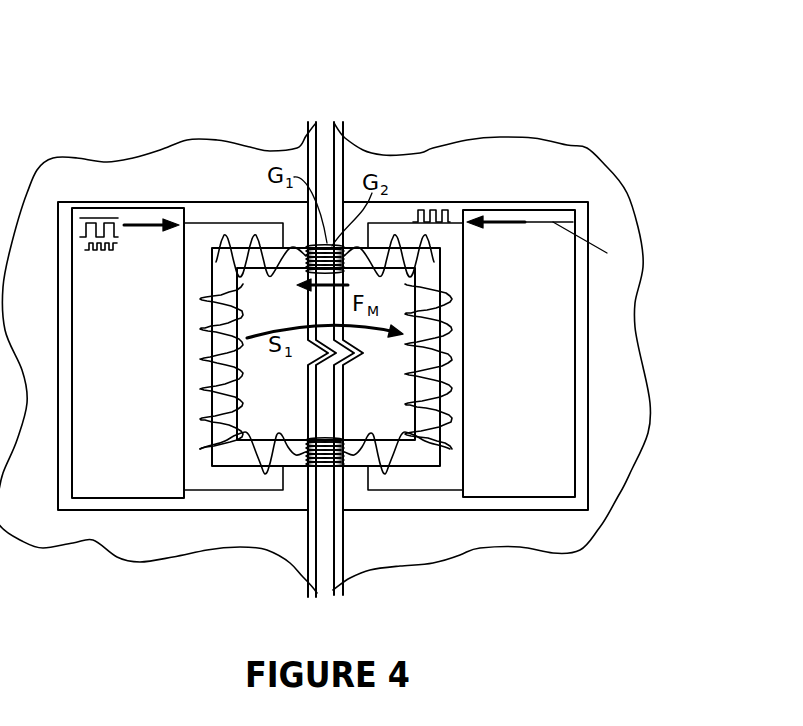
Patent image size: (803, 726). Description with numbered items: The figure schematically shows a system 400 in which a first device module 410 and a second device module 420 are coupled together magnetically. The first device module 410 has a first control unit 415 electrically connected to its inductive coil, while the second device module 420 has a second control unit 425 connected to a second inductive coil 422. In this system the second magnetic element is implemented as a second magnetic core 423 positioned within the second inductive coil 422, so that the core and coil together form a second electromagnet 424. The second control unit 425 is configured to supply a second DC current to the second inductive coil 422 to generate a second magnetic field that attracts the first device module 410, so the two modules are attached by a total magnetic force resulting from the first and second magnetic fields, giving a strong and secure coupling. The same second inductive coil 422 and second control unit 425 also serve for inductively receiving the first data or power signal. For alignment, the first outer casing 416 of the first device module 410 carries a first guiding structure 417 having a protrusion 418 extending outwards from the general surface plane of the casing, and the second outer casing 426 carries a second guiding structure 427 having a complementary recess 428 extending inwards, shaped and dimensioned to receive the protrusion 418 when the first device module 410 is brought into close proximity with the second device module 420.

The system 400 is at (498, 96).
The first device module 410 is at (148, 172).
The second device module 420 is at (565, 168).
The first control unit 415 is at (153, 440).
The second control unit 425 is at (540, 432).
The first outer casing 416 is at (224, 374).
The first guiding structure 417 is at (327, 363).
The protrusion 418 is at (310, 553).
The second outer casing 426 is at (429, 386).
The second guiding structure 427 is at (349, 365).
The complementary recess 428 is at (335, 560).
The second inductive coil 422 is at (410, 453).
The second magnetic core 423 is at (450, 450).
The second electromagnet 424 is at (414, 425).